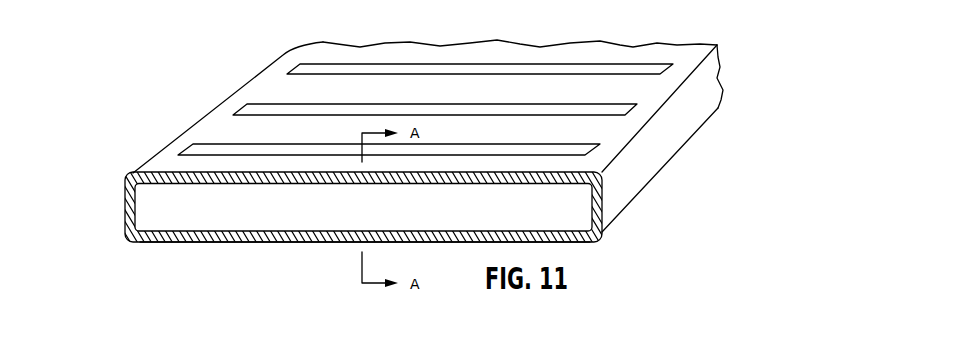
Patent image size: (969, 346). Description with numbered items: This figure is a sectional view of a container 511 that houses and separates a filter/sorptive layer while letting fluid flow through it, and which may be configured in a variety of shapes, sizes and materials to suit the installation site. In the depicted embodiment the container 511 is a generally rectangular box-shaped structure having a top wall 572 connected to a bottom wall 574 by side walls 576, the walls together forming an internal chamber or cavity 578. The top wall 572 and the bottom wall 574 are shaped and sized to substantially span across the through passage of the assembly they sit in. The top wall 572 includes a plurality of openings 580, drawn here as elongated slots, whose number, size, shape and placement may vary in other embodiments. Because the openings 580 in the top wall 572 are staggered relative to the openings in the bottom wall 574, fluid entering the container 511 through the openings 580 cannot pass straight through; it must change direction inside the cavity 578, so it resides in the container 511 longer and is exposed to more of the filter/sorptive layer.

The container 511 is at (128, 58).
The top wall 572 is at (177, 165).
The bottom wall 574 is at (158, 245).
The side walls 576 is at (127, 212).
The internal chamber or cavity 578 is at (278, 218).
The openings 580 is at (655, 68).